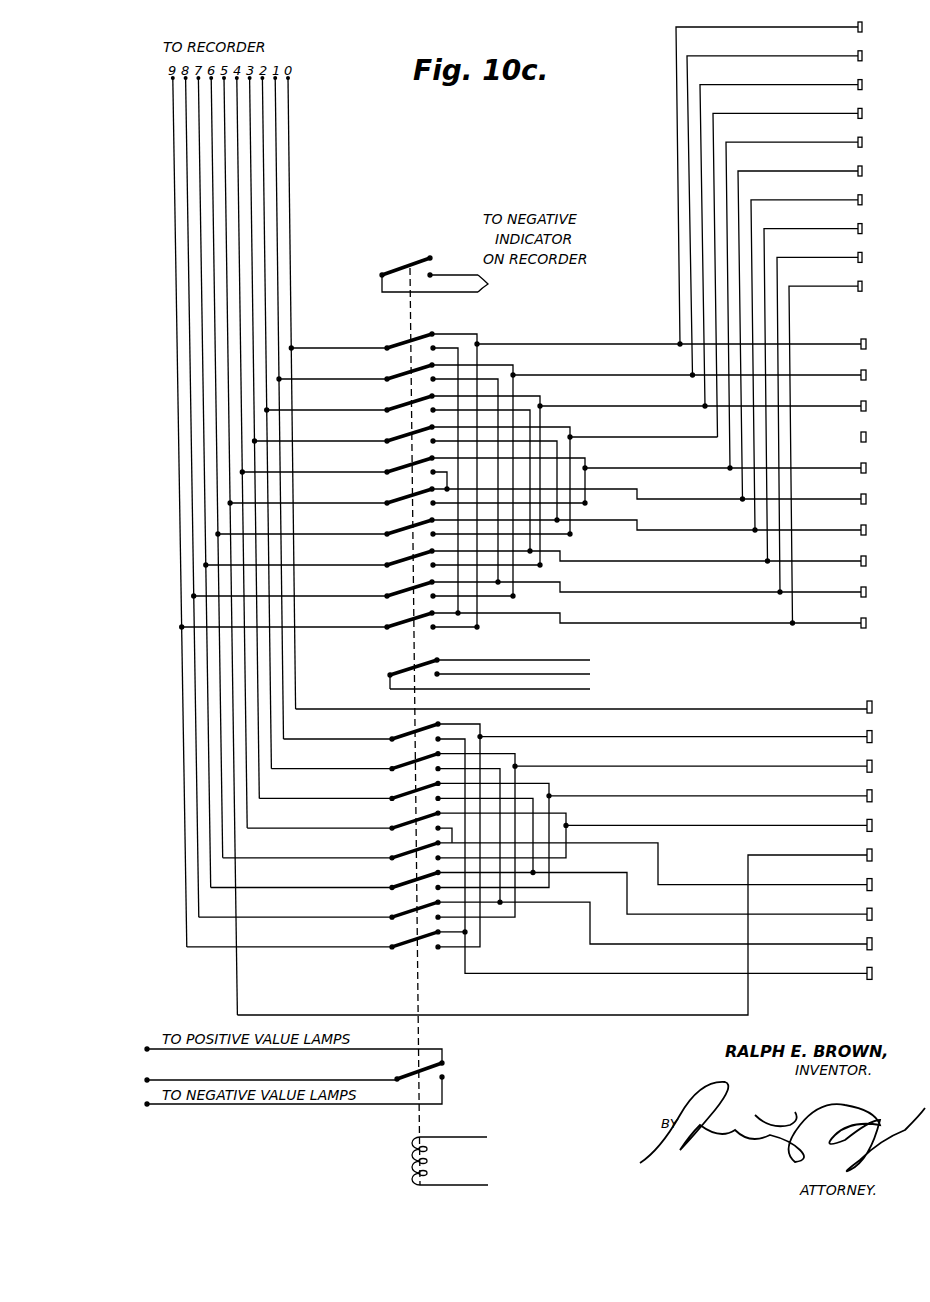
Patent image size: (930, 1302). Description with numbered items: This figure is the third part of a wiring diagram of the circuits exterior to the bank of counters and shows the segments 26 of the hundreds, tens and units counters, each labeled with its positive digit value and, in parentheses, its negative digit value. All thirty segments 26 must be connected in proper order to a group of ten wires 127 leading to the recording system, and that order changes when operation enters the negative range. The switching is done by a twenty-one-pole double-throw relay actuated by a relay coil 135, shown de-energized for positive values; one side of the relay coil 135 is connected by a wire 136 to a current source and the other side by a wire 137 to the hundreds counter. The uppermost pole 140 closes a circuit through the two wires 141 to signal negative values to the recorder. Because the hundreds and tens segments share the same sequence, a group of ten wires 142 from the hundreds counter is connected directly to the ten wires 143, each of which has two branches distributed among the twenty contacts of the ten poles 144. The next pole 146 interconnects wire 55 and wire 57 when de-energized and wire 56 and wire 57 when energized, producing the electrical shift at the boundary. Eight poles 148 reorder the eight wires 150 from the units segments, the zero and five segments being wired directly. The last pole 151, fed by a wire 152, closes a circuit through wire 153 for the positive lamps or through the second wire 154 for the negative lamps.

The group of ten wires 127 is at (304, 185).
The uppermost relay pole 140 is at (393, 262).
The two wires 141 is at (499, 285).
The group of ten wires 142 is at (675, 184).
The group of ten wires 143 is at (622, 331).
The ten poles 144 is at (391, 342).
The pole 146 is at (396, 664).
The eight poles 148 is at (405, 739).
The eight wires 150 is at (574, 909).
The wire 55 is at (505, 660).
The wire 56 is at (530, 675).
The wire 57 is at (530, 689).
The last pole 151 is at (407, 1071).
The wire 152 is at (242, 1080).
The wire 153 is at (425, 1043).
The second wire 154 is at (447, 1088).
The relay coil 135 is at (413, 1164).
The wire 136 is at (472, 1185).
The wire 137 is at (472, 1137).
The segments 26 is at (857, 29).